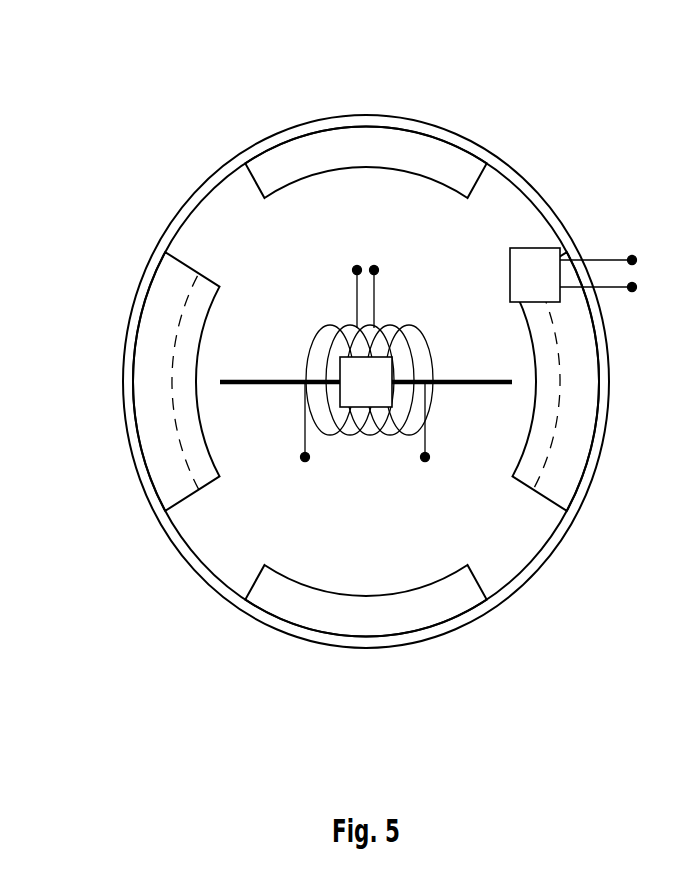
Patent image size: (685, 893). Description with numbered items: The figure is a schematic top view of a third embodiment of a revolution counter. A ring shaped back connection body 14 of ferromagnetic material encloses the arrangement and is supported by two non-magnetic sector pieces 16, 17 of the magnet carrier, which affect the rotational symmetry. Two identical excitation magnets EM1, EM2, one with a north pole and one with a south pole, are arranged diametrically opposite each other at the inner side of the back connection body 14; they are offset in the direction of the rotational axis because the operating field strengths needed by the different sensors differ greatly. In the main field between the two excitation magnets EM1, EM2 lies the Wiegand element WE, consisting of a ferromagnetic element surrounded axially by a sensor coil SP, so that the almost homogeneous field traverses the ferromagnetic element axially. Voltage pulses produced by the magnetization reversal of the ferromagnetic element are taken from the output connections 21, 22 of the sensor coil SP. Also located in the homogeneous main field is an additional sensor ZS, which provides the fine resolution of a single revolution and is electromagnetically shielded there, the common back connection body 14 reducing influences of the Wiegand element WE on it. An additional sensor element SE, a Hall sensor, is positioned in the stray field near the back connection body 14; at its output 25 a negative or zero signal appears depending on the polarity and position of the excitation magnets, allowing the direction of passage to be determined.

The ring shaped back connection body 14 is at (207, 190).
The sector piece 17 is at (322, 153).
The sector piece 16 is at (393, 613).
The excitation magnet EM1 is at (168, 327).
The excitation magnet EM2 is at (582, 381).
The Wiegand element WE is at (473, 471).
The sensor coil SP is at (402, 357).
The additional sensor ZS is at (367, 378).
The output connection 21 is at (308, 440).
The output connection 22 is at (428, 440).
The additional sensor element SE is at (540, 270).
The output 25 is at (612, 275).